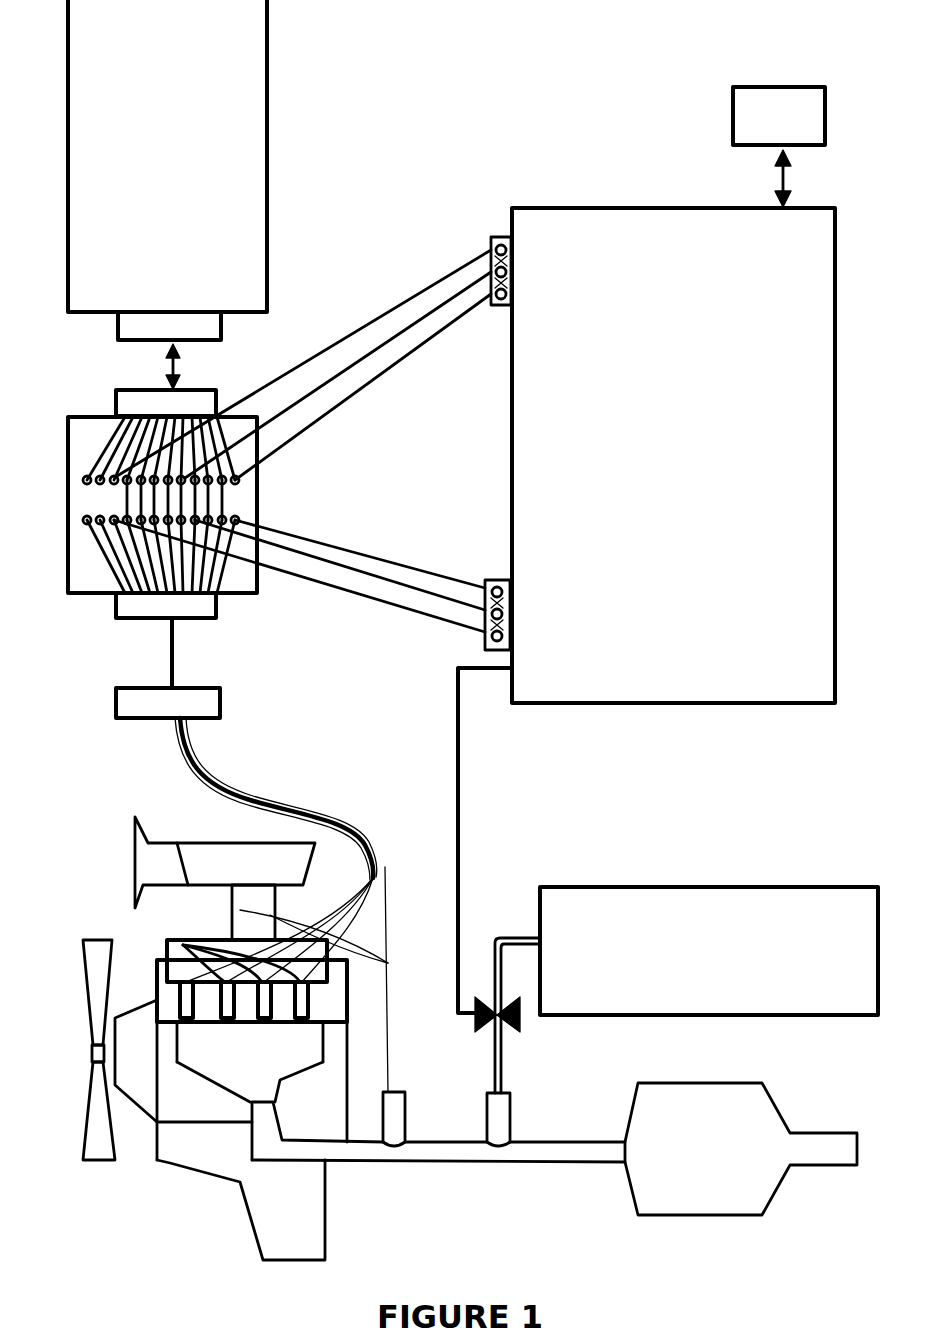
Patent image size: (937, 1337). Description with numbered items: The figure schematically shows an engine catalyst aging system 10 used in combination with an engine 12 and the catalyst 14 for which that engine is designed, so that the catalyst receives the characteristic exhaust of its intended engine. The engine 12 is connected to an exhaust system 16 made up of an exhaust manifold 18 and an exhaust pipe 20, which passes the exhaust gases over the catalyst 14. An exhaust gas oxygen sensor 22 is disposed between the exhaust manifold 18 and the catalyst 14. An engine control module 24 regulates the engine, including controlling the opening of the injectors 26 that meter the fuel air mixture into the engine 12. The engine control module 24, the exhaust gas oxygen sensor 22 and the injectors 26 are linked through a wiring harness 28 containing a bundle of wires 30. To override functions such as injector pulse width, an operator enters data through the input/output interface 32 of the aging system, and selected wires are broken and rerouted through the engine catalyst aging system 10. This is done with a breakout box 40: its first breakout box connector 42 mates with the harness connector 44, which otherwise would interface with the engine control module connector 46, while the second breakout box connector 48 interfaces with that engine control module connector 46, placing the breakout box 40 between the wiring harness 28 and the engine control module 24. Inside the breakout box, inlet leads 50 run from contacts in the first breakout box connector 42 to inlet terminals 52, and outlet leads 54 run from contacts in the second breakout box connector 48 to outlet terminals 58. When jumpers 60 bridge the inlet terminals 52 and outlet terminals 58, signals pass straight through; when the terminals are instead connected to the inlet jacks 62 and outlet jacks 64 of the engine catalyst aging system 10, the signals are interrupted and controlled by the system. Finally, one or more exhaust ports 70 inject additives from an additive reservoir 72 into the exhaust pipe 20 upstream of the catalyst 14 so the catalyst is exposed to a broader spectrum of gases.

The engine catalyst aging system 10 is at (578, 196).
The engine 12 is at (140, 1168).
The catalyst 14 is at (653, 1172).
The exhaust system 16 is at (432, 1185).
The exhaust manifold 18 is at (257, 1063).
The exhaust pipe 20 is at (518, 1152).
The exhaust gas oxygen sensor 22 is at (398, 1122).
The engine control module 24 is at (280, 85).
The injectors 26 is at (180, 940).
The wiring harness 28 is at (363, 827).
The wires 30 is at (330, 925).
The input/output interface 32 is at (733, 89).
The breakout box 40 is at (298, 518).
The first breakout box connector 42 is at (204, 640).
The harness connector 44 is at (200, 702).
The engine control module connector 46 is at (221, 333).
The second breakout box connector 48 is at (116, 405).
The inlet leads 50 is at (105, 543).
The inlet terminals 52 is at (118, 592).
The outlet leads 54 is at (108, 447).
The outlet terminals 58 is at (236, 466).
The jumpers 60 is at (222, 503).
The inlet jacks 62 is at (517, 637).
The outlet jacks 64 is at (514, 247).
The exhaust ports 70 is at (503, 1117).
The additive reservoir 72 is at (671, 850).